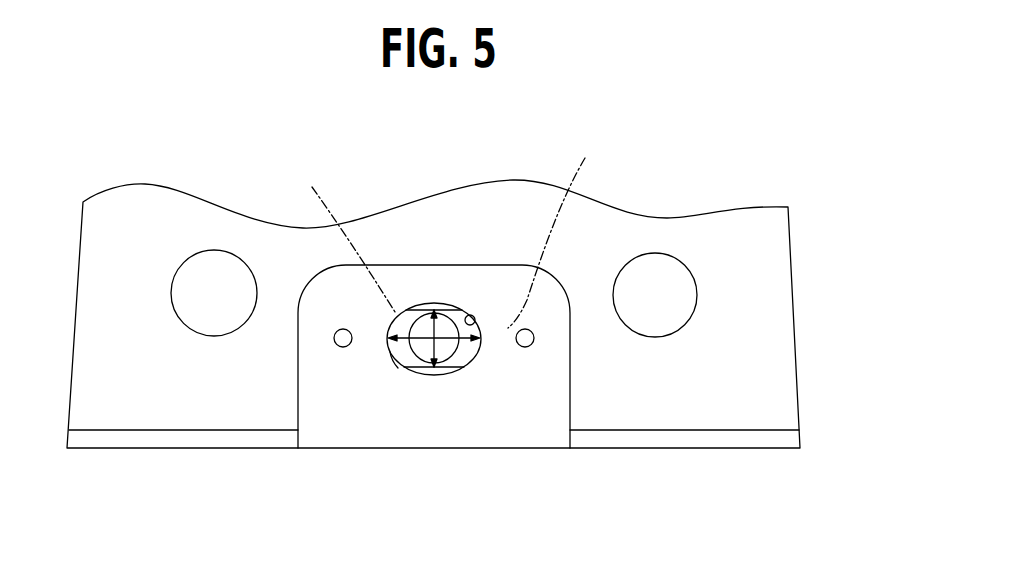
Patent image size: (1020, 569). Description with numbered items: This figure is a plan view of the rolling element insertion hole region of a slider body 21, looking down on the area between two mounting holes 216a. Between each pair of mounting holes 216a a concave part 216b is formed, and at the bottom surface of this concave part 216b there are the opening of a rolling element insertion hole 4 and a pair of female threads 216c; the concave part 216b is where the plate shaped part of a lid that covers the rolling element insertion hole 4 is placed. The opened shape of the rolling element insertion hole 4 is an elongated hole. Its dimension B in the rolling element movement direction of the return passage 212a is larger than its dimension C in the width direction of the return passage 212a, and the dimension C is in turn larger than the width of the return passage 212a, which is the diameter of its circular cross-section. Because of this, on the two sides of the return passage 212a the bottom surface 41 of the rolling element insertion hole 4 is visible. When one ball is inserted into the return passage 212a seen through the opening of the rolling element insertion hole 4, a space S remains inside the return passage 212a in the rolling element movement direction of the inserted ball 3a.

The bracket plate 21 is at (743, 199).
The mounting holes 216a is at (196, 325).
The concave part 216b is at (298, 403).
The female threads 216c is at (343, 347).
The return passage 212a is at (398, 368).
The rolling element insertion hole 4 is at (488, 328).
The bottom surface 41 is at (433, 310).
The inserted ball 3a is at (453, 353).
The dimension in the width direction C is at (459, 315).
The dimension in the rolling element movement direction B is at (400, 316).
The space S is at (452, 233).